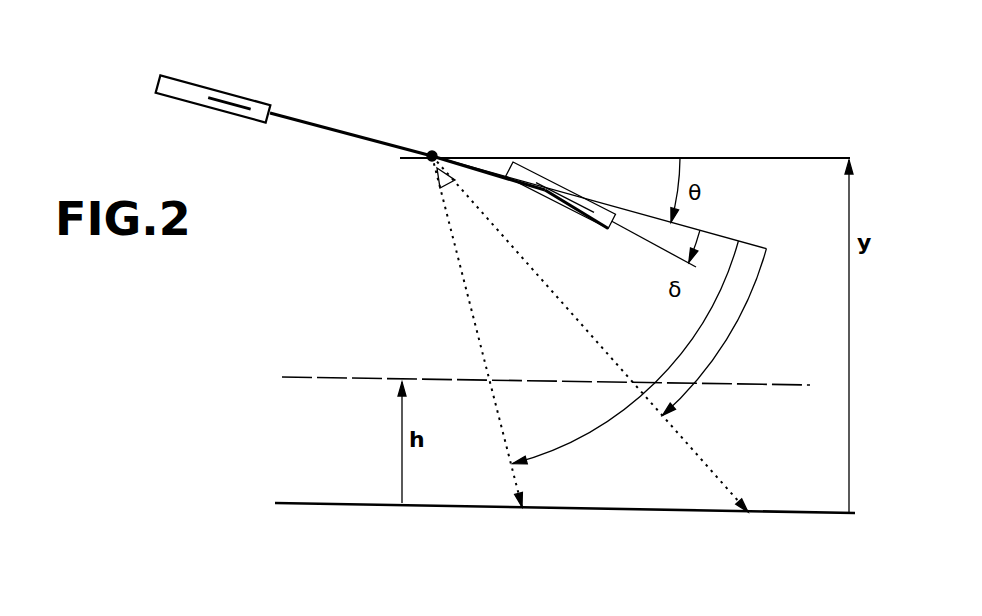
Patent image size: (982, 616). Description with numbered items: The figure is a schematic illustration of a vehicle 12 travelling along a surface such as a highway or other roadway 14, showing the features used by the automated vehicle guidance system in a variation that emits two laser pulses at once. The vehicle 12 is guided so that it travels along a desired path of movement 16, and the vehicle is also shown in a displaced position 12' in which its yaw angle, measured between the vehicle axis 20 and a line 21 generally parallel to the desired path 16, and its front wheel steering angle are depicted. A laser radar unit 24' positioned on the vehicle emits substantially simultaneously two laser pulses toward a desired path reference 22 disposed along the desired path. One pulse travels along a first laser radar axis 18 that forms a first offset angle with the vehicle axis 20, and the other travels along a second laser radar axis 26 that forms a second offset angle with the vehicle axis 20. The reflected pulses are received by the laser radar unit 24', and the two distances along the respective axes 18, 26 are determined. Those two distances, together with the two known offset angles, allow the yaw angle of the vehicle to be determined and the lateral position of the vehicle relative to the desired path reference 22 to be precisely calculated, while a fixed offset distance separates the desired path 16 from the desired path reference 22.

The vehicle 12 is at (294, 87).
The vehicle in displaced position 12' is at (564, 177).
The roadway 14 is at (258, 274).
The desired path of movement 16 is at (360, 375).
The laser radar axis 18 is at (567, 308).
The vehicle axis 20 is at (736, 240).
The line parallel to the desired path 21 is at (728, 158).
The desired path reference 22 is at (460, 514).
The laser radar unit 24' is at (475, 137).
The laser radar axis 26 is at (481, 345).